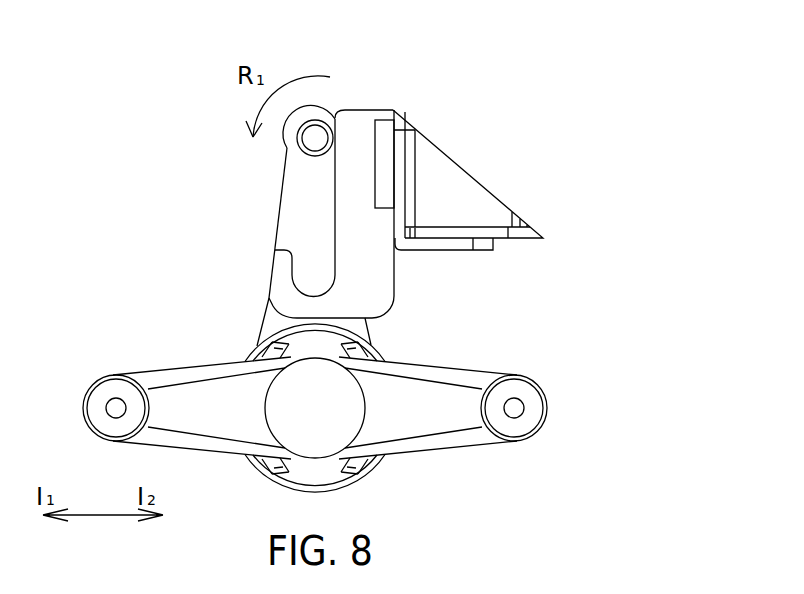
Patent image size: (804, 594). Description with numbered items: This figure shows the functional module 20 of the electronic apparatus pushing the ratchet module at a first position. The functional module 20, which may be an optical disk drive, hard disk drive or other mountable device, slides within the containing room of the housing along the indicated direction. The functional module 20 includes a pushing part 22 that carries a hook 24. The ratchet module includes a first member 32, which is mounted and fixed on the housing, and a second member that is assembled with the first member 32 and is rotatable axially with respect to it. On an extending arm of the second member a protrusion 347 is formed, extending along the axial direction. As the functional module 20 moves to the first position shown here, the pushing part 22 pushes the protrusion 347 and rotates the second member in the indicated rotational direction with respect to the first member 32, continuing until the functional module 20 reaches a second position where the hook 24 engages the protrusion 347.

The functional module 20 is at (472, 190).
The pushing part 22 is at (348, 177).
The hook 24 is at (282, 283).
The first member 32 is at (518, 88).
The protrusion 347 is at (315, 140).